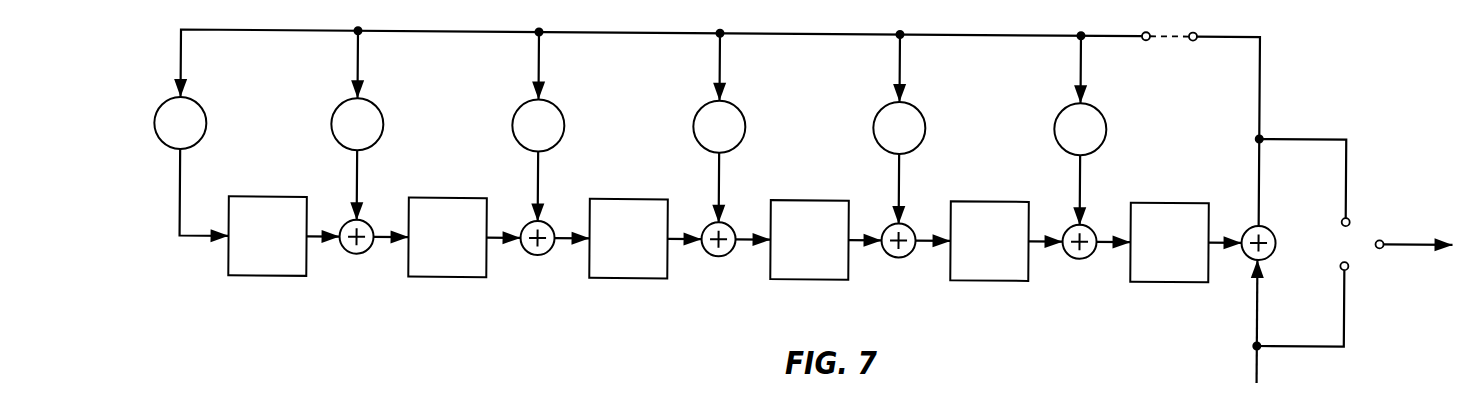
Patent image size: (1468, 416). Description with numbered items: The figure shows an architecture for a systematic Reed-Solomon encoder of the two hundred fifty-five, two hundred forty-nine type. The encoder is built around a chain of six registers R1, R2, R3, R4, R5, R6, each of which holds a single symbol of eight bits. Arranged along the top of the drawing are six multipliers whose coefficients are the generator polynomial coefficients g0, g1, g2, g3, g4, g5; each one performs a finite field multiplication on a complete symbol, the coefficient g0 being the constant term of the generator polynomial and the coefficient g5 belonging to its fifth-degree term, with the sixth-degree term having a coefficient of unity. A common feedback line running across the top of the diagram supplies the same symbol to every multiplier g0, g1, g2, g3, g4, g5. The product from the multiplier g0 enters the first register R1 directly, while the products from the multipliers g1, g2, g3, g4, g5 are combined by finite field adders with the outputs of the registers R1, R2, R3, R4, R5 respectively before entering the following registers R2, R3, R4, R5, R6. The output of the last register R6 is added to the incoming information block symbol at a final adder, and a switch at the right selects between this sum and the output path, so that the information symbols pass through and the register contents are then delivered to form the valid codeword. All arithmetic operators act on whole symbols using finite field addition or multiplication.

The generator polynomial coefficient g0 is at (180, 123).
The generator polynomial coefficient g1 is at (357, 124).
The generator polynomial coefficient g2 is at (538, 125).
The generator polynomial coefficient g3 is at (719, 127).
The generator polynomial coefficient g4 is at (899, 128).
The generator polynomial coefficient g5 is at (1080, 129).
The register R1 is at (267, 236).
The register R2 is at (447, 238).
The register R3 is at (628, 239).
The register R4 is at (809, 240).
The register R5 is at (989, 241).
The register R6 is at (1169, 243).